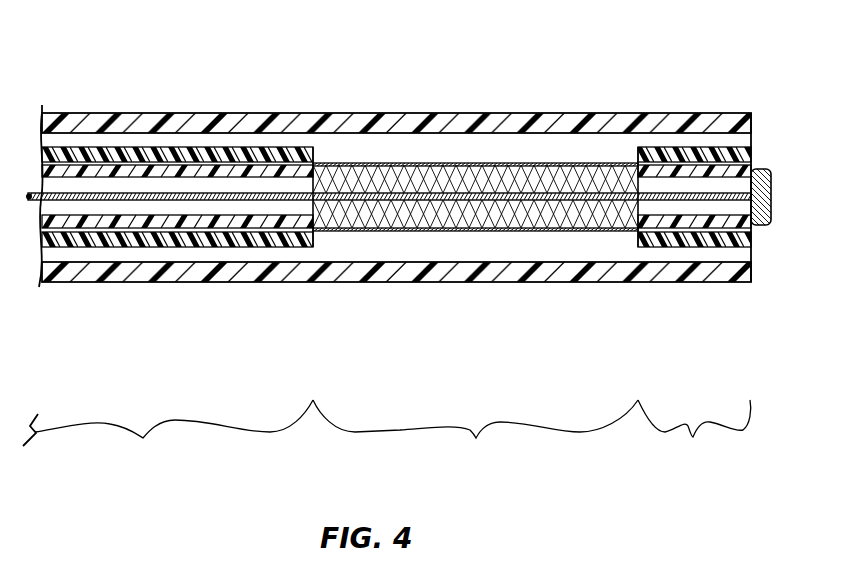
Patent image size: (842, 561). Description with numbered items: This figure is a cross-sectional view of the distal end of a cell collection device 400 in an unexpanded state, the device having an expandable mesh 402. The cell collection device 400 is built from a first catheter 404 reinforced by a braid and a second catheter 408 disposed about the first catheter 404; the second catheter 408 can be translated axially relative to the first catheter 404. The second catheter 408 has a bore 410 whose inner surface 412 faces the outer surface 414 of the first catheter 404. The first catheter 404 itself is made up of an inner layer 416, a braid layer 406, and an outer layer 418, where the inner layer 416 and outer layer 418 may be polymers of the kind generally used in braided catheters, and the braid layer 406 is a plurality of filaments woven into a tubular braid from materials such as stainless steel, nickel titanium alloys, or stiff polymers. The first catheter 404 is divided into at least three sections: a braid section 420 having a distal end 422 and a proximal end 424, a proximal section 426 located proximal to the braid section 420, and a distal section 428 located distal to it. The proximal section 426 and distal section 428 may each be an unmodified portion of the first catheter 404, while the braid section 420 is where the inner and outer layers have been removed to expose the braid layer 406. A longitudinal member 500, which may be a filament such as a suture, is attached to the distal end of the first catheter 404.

The cell collection device 400 is at (519, 78).
The expandable mesh 402 is at (570, 165).
The first catheter 404 is at (288, 248).
The braid layer 406 is at (315, 222).
The second catheter 408 is at (527, 280).
The bore 410 is at (397, 147).
The inner surface 412 is at (368, 134).
The outer surface 414 is at (205, 243).
The inner layer 416 is at (163, 153).
The outer layer 418 is at (117, 170).
The braid section 420 is at (475, 441).
The distal end 422 is at (628, 250).
The proximal end 424 is at (317, 219).
The proximal section 426 is at (174, 441).
The distal section 428 is at (694, 441).
The longitudinal member 500 is at (717, 190).